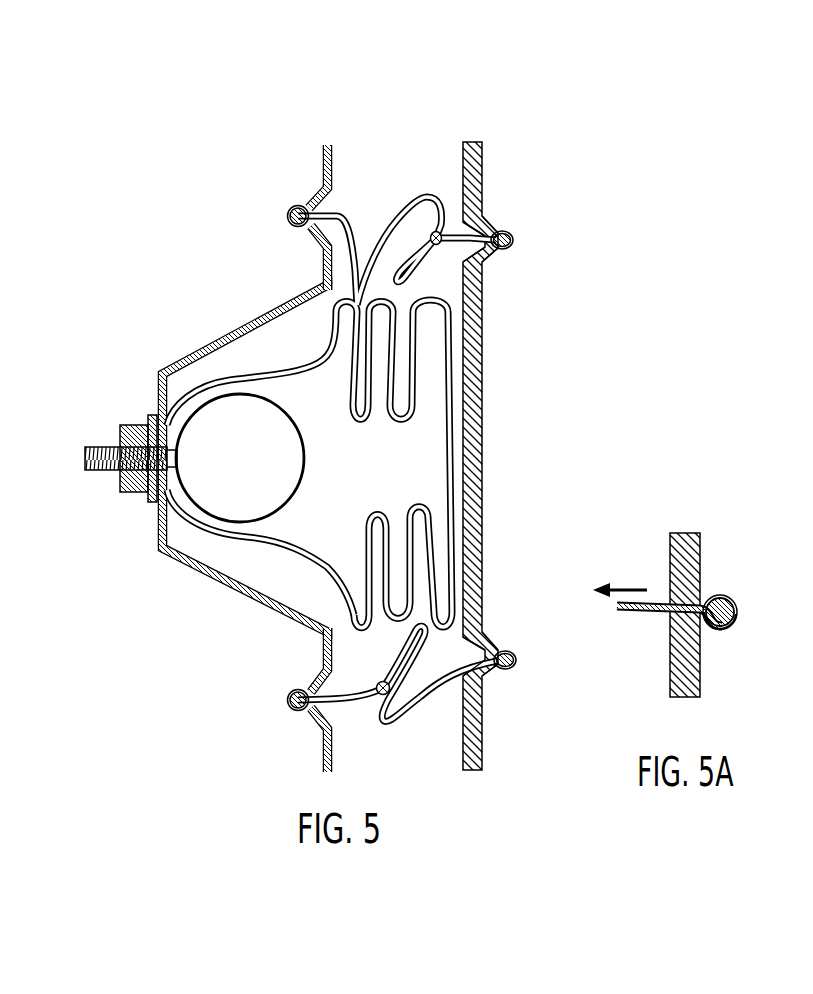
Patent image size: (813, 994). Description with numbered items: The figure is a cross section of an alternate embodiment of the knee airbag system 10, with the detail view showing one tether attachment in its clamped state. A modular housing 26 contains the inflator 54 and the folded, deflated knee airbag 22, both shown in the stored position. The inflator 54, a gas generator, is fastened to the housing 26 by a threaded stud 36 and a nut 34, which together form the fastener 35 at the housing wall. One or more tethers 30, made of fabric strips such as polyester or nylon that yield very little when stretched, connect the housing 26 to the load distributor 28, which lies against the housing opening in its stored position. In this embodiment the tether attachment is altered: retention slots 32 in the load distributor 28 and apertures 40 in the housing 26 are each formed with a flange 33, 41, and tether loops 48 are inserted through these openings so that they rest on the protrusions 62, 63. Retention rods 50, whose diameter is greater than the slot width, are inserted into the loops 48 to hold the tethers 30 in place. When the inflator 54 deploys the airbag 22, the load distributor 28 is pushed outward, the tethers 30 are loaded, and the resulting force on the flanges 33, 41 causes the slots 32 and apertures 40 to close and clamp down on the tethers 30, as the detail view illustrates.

In FIG. 5, the knee airbag system 10 is at (336, 434).
In FIG. 5, the knee airbag 22 is at (425, 300).
In FIG. 5, the modular housing 26 is at (232, 594).
In FIG. 5A, the modular housing 26 is at (727, 615).
In FIG. 5A, the load distributor 28 is at (702, 677).
In FIG. 5, the tether 30 is at (419, 197).
In FIG. 5A, the tether 30 is at (643, 613).
In FIG. 5, the retention slot 32 is at (456, 233).
In FIG. 5A, the retention slot 32 is at (739, 573).
In FIG. 5, the flange 33 is at (492, 230).
In FIG. 5, the nut 34 is at (132, 425).
In FIG. 5, the fastener assembly 35 is at (120, 447).
In FIG. 5, the threaded stud 36 is at (93, 472).
In FIG. 5, the aperture 40 is at (313, 210).
In FIG. 5A, the aperture 40 is at (705, 598).
In FIG. 5, the flange 41 is at (313, 212).
In FIG. 5, the tether loop 48 is at (292, 222).
In FIG. 5A, the tether loop 48 is at (727, 593).
In FIG. 5, the retention rod 50 is at (293, 209).
In FIG. 5A, the retention rod 50 is at (735, 620).
In FIG. 5, the inflator 54 is at (252, 471).
In FIG. 5, the protrusion 62 is at (488, 254).
In FIG. 5, the protrusion 63 is at (311, 232).